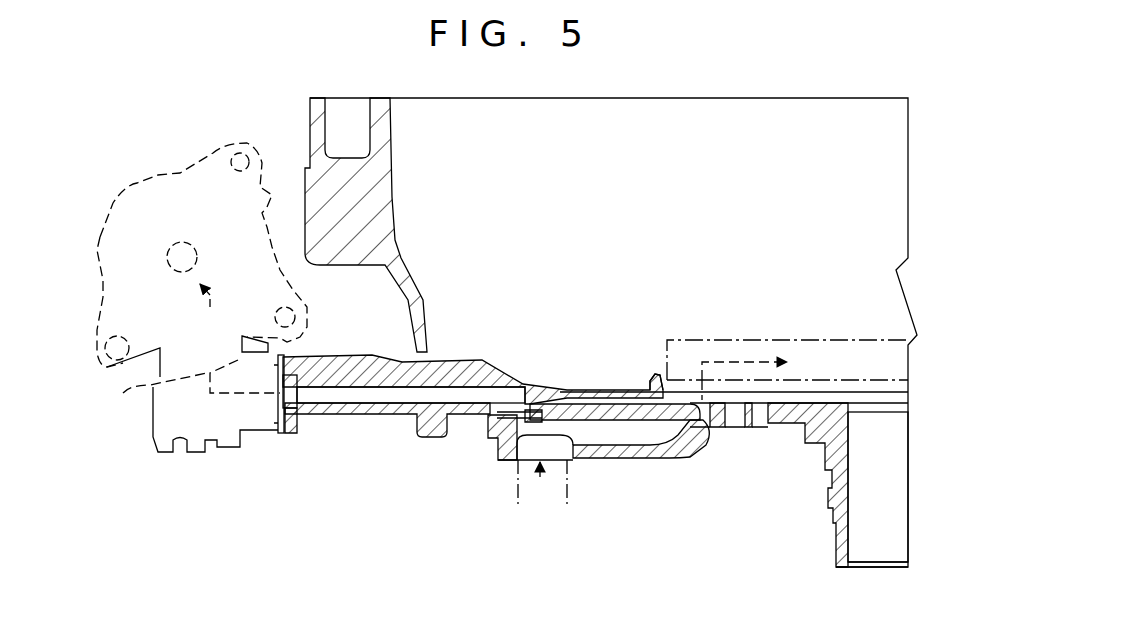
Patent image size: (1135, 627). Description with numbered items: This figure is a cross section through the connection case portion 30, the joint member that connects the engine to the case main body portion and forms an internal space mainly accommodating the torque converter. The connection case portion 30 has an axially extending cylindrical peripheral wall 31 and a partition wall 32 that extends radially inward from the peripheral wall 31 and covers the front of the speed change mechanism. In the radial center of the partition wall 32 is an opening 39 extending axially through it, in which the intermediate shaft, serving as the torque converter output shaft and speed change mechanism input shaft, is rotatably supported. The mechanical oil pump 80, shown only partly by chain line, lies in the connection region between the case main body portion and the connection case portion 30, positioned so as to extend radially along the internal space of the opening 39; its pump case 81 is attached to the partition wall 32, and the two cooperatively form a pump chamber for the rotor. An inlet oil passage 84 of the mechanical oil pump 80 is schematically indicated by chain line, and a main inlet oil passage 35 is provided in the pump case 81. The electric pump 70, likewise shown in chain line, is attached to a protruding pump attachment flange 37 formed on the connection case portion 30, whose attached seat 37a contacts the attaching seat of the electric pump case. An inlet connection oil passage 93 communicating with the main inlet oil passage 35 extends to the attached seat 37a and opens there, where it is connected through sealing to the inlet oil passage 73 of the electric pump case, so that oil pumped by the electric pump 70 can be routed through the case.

The connection case portion 30 is at (278, 114).
The peripheral wall 31 is at (385, 217).
The partition wall 32 is at (385, 416).
The main inlet oil passage 35 is at (620, 430).
The pump attachment flange 37 is at (300, 356).
The attached seat 37a is at (268, 432).
The opening 39 is at (658, 366).
The electric pump 70 is at (148, 175).
The inlet oil passage 73 is at (188, 400).
The mechanical oil pump 80 is at (787, 345).
The pump case 81 is at (812, 440).
The inlet oil passage 84 is at (733, 358).
The inlet connection oil passage 93 is at (345, 396).